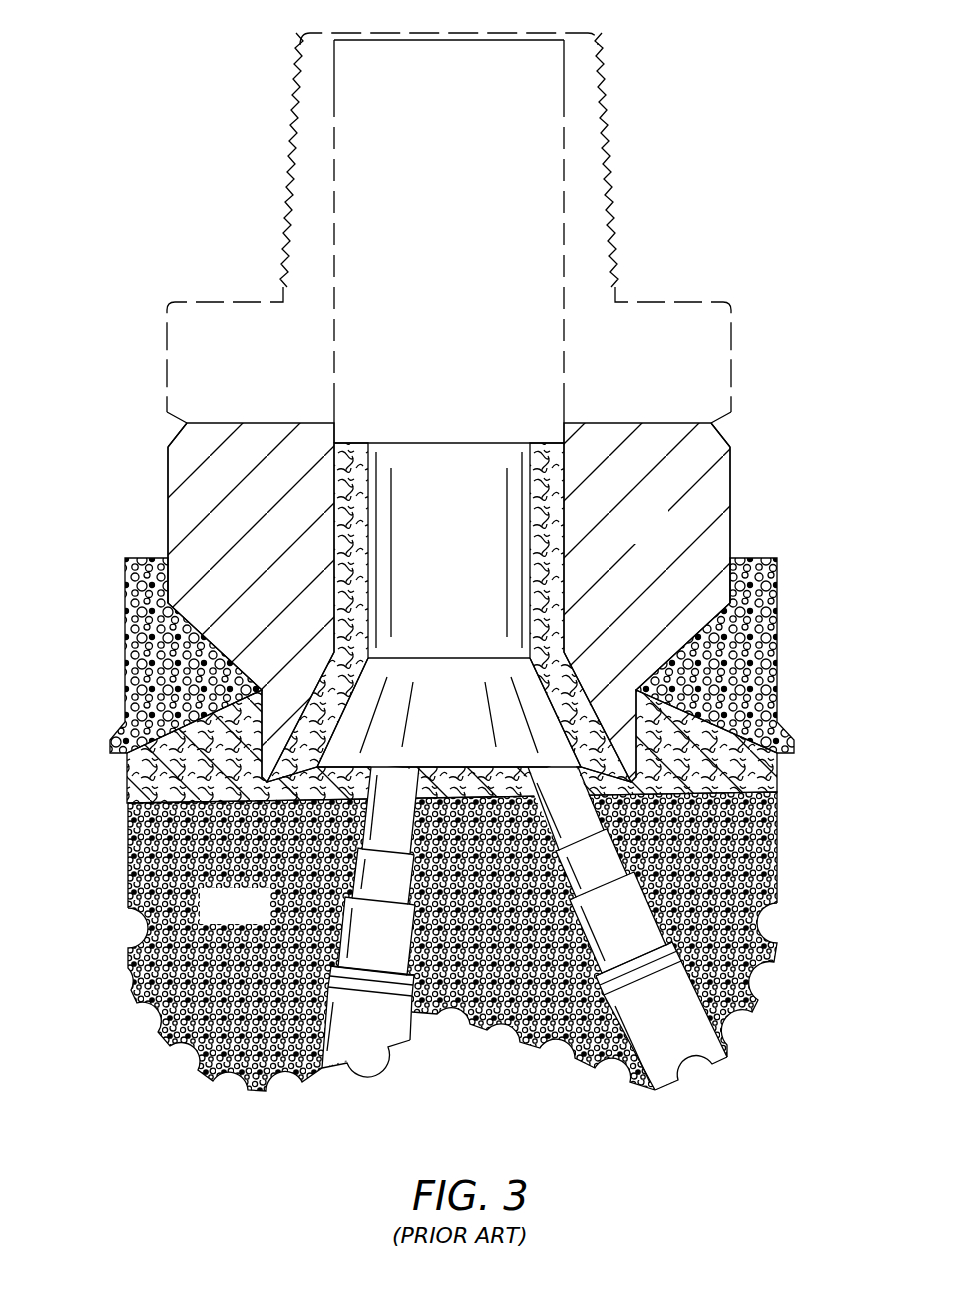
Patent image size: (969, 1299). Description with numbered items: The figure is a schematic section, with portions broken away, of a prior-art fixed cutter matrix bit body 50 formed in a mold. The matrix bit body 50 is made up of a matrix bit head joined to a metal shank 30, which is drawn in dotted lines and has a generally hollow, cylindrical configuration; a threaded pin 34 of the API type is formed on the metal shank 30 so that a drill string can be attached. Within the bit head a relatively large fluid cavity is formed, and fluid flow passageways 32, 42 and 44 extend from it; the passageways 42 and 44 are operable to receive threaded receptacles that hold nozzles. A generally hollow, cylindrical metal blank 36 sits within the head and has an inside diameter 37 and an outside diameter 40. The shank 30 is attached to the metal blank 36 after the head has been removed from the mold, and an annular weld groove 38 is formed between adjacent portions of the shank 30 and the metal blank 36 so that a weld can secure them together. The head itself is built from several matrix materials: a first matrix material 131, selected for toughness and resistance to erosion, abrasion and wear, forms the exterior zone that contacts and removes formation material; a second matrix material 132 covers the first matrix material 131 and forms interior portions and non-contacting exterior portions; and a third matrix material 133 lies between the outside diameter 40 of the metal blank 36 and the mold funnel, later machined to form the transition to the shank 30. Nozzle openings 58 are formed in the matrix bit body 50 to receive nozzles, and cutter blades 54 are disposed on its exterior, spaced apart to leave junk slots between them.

The metal shank 30 is at (738, 322).
The fluid flow passageway 32 is at (467, 226).
The threaded pin 34 is at (295, 110).
The metal blank 36 is at (665, 542).
The inside diameter of metal blank 37 is at (347, 583).
The annular weld groove 38 is at (172, 420).
The outside diameter of metal blank 40 is at (168, 527).
The fluid flow passageway 42 is at (392, 946).
The fluid flow passageway 44 is at (636, 931).
The matrix bit body 50 is at (826, 680).
The cutter blades 54 is at (330, 1070).
The nozzle openings 58 is at (130, 925).
The first matrix material 131 is at (262, 923).
The second matrix material 132 is at (127, 775).
The third matrix material 133 is at (780, 596).